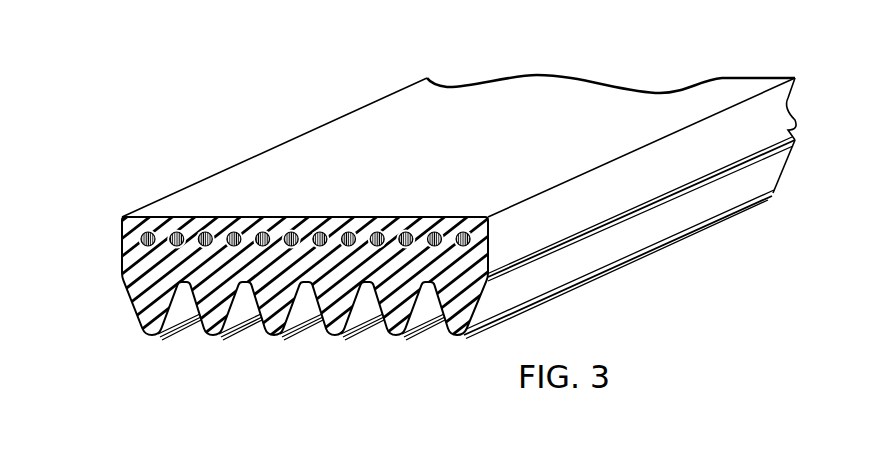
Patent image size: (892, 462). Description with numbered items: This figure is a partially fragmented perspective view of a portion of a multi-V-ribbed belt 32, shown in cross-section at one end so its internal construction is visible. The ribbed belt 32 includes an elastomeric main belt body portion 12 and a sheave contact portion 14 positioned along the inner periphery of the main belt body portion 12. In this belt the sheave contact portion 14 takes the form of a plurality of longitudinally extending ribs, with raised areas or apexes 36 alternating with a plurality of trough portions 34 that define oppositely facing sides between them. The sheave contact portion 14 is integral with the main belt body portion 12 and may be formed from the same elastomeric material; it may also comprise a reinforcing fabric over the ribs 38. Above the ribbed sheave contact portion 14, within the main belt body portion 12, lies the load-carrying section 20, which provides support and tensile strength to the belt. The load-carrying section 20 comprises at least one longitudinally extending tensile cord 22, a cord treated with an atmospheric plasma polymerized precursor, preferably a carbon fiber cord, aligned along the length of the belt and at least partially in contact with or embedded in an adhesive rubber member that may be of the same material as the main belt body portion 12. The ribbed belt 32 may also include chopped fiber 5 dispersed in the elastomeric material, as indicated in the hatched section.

The main elastomeric belt body portion 12 is at (617, 108).
The sheave contact portion 14 is at (599, 282).
The load-carrying section 20 is at (134, 232).
The tensile cord 22 is at (175, 231).
The multi-V-ribbed belt 32 is at (275, 110).
The trough portions 34 is at (303, 305).
The ribs 36 is at (216, 335).
The ribs 38 is at (240, 318).
The chopped fiber 5 is at (347, 310).